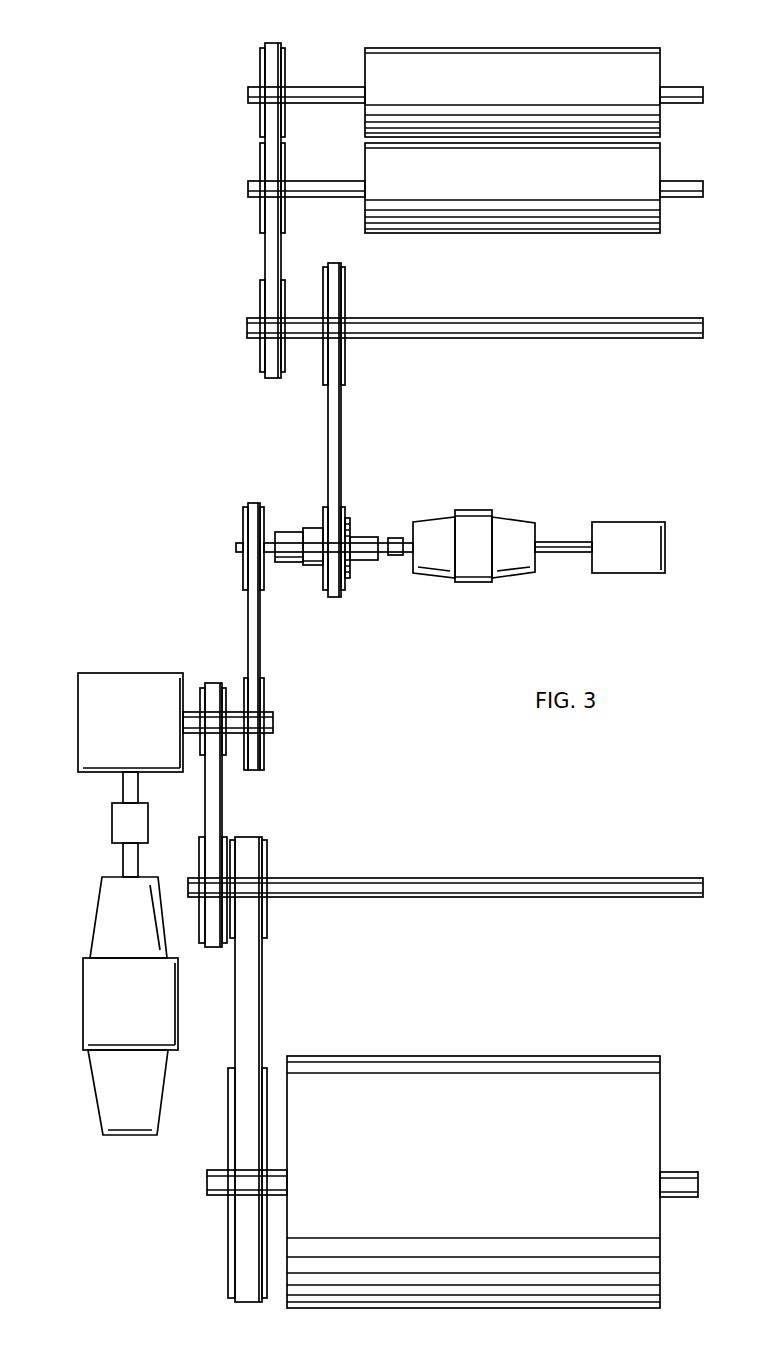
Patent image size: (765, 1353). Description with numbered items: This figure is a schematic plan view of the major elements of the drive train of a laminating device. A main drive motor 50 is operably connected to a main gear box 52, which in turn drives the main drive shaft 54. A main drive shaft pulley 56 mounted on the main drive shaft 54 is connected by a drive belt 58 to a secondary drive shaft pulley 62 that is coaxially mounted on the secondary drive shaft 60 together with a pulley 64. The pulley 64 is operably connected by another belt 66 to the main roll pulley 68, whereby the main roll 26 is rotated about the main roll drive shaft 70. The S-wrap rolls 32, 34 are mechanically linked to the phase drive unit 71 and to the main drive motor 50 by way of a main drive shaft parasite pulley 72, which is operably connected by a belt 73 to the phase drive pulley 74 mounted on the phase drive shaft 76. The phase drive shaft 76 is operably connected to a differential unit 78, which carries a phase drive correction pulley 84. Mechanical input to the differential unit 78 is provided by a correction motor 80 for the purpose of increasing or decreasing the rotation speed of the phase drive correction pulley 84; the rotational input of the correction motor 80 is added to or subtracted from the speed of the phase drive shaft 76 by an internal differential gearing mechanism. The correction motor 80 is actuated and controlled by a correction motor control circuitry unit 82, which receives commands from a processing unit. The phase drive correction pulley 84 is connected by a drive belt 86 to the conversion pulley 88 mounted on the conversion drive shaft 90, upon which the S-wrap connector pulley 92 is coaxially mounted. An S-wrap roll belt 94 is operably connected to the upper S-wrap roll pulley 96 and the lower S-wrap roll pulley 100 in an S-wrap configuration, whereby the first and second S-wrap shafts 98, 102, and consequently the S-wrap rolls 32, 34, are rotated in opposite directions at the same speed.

The main roll 26 is at (530, 1057).
The S-wrap roll 32 is at (660, 50).
The S-wrap roll 34 is at (650, 171).
The main drive motor 50 is at (83, 1000).
The main gear box 52 is at (78, 733).
The main drive shaft 54 is at (275, 725).
The main drive shaft pulley 56 is at (200, 690).
The drive belt 58 is at (215, 810).
The secondary drive shaft 60 is at (325, 878).
The secondary drive shaft pulley 62 is at (200, 845).
The pulley 64 is at (270, 852).
The belt 66 is at (250, 1021).
The main roll pulley 68 is at (228, 1252).
The main roll drive shaft 70 is at (207, 1180).
The phase drive unit 71 is at (241, 493).
The main drive shaft parasite pulley 72 is at (265, 695).
The belt 73 is at (252, 645).
The phase drive pulley 74 is at (243, 532).
The phase drive shaft 76 is at (268, 540).
The differential unit 78 is at (360, 545).
The correction motor 80 is at (510, 528).
The correction motor control circuitry unit 82 is at (613, 525).
The phase drive correction pulley 84 is at (346, 516).
The drive belt 86 is at (333, 425).
The conversion pulley 88 is at (347, 292).
The conversion drive shaft 90 is at (540, 340).
The S-wrap connector pulley 92 is at (262, 303).
The S-wrap roll belt 94 is at (268, 268).
The upper S-wrap roll pulley 96 is at (262, 67).
The first S-wrap shaft 98 is at (248, 97).
The lower S-wrap roll pulley 100 is at (262, 158).
The second S-wrap shaft 102 is at (248, 190).